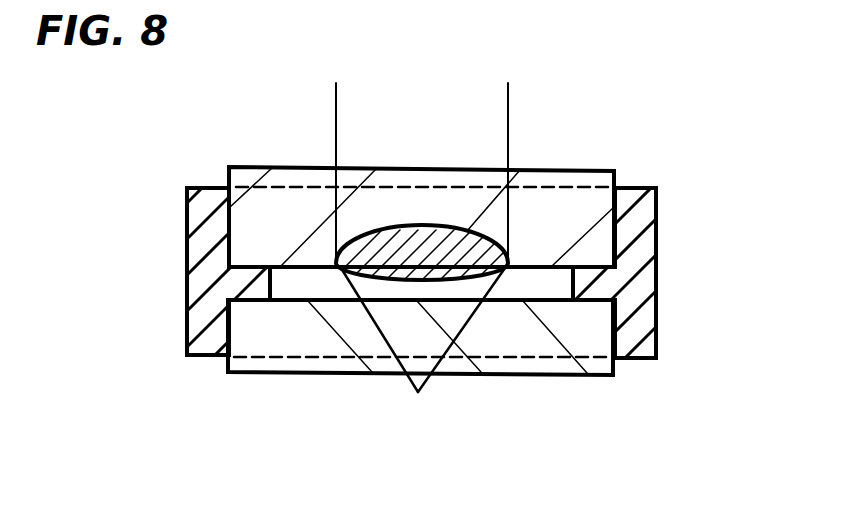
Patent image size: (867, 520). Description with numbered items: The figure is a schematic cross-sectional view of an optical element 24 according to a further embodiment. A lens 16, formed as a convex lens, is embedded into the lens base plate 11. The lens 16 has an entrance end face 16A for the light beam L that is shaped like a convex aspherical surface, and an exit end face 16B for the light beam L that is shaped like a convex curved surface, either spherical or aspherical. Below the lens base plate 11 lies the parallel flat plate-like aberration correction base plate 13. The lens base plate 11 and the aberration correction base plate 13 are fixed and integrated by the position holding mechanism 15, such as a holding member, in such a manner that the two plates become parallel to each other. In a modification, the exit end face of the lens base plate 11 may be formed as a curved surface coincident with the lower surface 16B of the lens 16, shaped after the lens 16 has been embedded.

The lens base plate 11 is at (577, 207).
The aberration correction base plate 13 is at (535, 345).
The position holding mechanism 15 is at (212, 278).
The lens 16 is at (482, 257).
The entrance end face 16A is at (423, 212).
The exit end face 16B is at (382, 296).
The optical element 24 is at (133, 397).
The light beam L is at (509, 121).